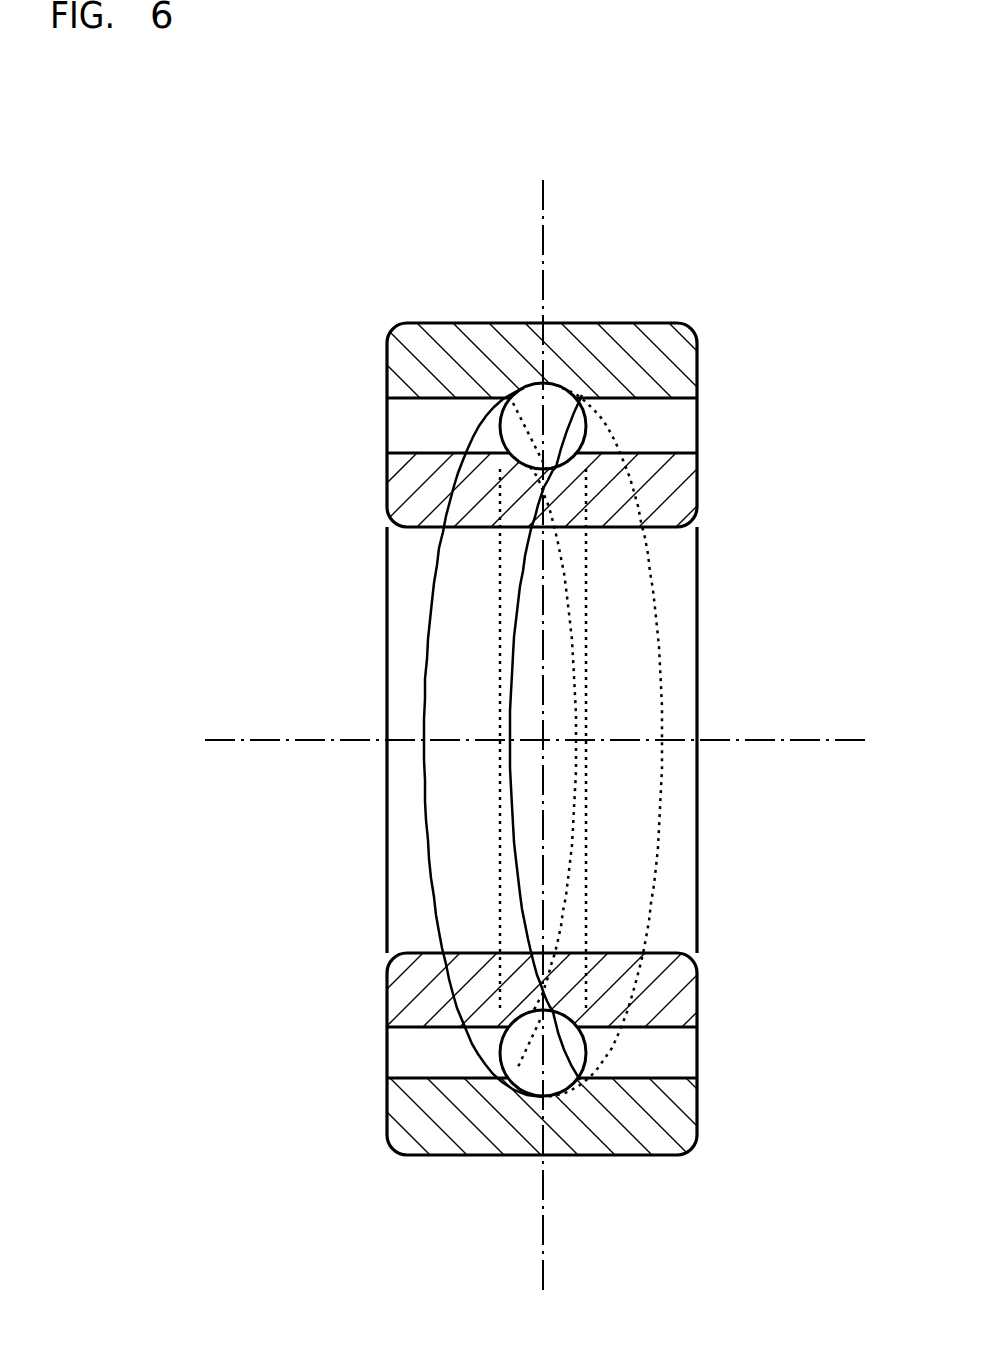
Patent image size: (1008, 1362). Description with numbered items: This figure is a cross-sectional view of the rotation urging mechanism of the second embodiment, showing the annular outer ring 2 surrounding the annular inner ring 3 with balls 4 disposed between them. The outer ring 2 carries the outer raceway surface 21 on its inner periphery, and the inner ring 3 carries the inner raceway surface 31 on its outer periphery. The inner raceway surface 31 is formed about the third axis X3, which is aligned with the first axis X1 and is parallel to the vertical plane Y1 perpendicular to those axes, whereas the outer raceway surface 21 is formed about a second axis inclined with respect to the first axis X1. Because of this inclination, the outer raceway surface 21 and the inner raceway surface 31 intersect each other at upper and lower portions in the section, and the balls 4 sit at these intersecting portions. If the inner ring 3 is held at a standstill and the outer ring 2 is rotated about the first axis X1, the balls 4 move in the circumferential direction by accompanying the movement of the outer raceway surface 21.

The outer ring 2 is at (682, 365).
The inner ring 3 is at (682, 486).
The balls 4 is at (528, 402).
The outer raceway surface 21 is at (558, 394).
The inner raceway surface 31 is at (500, 432).
The vertical plane Y1 is at (543, 215).
The first axis X1 is at (248, 741).
The third axis X3 is at (520, 803).